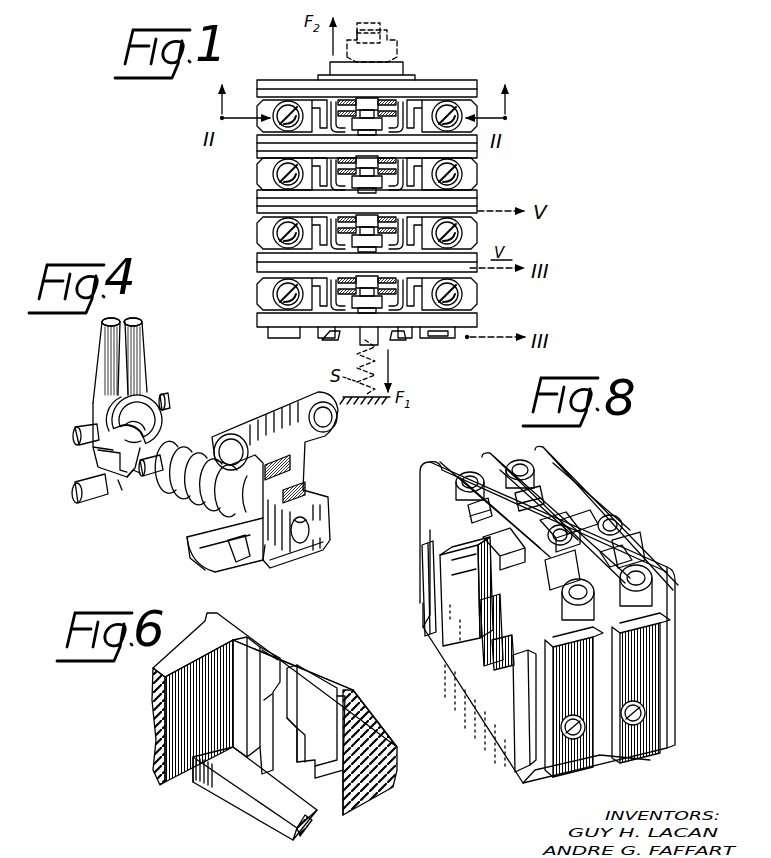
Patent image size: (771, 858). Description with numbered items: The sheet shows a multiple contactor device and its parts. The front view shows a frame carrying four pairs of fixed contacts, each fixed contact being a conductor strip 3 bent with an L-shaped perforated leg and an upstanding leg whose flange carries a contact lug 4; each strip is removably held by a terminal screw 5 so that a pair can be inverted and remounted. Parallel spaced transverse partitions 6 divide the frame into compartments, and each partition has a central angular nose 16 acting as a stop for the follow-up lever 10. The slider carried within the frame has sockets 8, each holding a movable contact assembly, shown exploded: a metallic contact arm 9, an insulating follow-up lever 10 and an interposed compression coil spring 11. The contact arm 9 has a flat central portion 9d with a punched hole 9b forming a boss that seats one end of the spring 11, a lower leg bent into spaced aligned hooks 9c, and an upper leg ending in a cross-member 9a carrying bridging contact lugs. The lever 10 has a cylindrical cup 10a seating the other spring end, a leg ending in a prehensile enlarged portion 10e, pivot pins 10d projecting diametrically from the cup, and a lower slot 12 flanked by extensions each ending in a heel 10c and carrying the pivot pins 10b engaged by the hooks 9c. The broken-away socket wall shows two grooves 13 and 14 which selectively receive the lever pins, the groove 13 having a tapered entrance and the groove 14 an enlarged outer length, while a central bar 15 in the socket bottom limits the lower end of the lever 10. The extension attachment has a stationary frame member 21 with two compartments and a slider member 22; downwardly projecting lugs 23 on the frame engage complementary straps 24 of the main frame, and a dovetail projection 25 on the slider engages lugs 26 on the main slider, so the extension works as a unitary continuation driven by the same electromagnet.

In FIG. 1, the conductor strip 3 is at (470, 178).
In FIG. 8, the conductor strip 3 is at (640, 640).
In FIG. 1, the contact lug 4 is at (346, 97).
In FIG. 8, the contact lug 4 is at (513, 512).
In FIG. 1, the terminal screw 5 is at (283, 108).
In FIG. 8, the terminal screw 5 is at (612, 567).
In FIG. 1, the transverse partition 6 is at (470, 150).
In FIG. 6, the socket 8 is at (221, 672).
In FIG. 4, the contact arm 9 is at (311, 479).
In FIG. 8, the contact arm 9 is at (590, 522).
In FIG. 4, the cross-member 9a is at (275, 435).
In FIG. 4, the hole 9b is at (308, 548).
In FIG. 4, the hooks 9c is at (206, 532).
In FIG. 4, the central portion 9d is at (318, 516).
In FIG. 1, the follow-up lever 10 is at (386, 128).
In FIG. 4, the follow-up lever 10 is at (151, 376).
In FIG. 8, the follow-up lever 10 is at (483, 537).
In FIG. 4, the cylindrical cup 10a is at (158, 424).
In FIG. 4, the pivot pins 10b is at (80, 487).
In FIG. 4, the heel 10c is at (130, 482).
In FIG. 4, the pivot pins 10d is at (86, 428).
In FIG. 4, the prehensile enlarged portion 10e is at (103, 325).
In FIG. 4, the compression coil spring 11 is at (213, 455).
In FIG. 4, the slot 12 is at (120, 483).
In FIG. 6, the groove 13 is at (270, 672).
In FIG. 6, the groove 14 is at (318, 703).
In FIG. 6, the bar 15 is at (245, 782).
In FIG. 1, the angular nose 16 is at (366, 94).
In FIG. 8, the frame member 21 is at (430, 478).
In FIG. 8, the slider member 22 is at (497, 538).
In FIG. 8, the lugs 23 is at (424, 596).
In FIG. 1, the straps 24 is at (431, 336).
In FIG. 8, the dovetail projection 25 is at (452, 652).
In FIG. 1, the lugs 26 is at (334, 338).